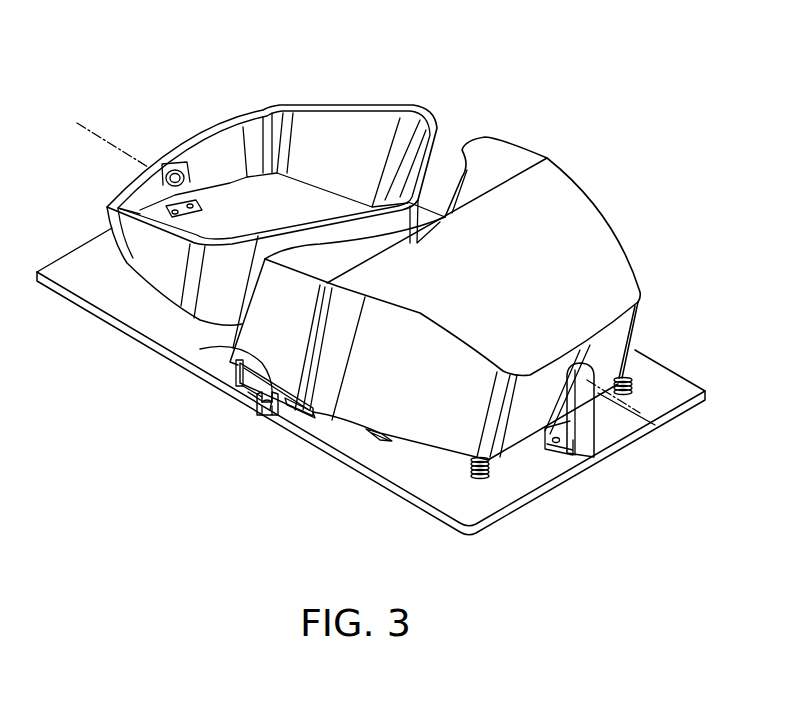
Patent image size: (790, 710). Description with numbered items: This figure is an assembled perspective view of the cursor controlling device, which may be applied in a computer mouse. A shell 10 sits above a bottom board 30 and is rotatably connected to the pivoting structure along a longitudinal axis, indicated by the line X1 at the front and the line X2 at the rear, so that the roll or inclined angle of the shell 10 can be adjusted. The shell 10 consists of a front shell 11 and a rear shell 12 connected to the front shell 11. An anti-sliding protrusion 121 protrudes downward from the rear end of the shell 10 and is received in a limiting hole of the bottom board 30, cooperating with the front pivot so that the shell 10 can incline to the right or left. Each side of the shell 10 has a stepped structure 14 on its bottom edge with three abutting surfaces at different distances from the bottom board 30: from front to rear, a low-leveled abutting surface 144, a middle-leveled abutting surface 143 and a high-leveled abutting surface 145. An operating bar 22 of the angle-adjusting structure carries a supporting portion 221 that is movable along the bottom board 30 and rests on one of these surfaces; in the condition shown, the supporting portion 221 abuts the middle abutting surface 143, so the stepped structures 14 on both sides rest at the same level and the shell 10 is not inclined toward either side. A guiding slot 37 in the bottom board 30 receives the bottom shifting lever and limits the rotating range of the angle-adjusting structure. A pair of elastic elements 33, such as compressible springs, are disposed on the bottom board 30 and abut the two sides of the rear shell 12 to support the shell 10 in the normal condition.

The shell 10 is at (505, 47).
The front shell 11 is at (364, 133).
The rear shell 12 is at (488, 163).
The anti-sliding protrusion 121 is at (563, 440).
The stepped structure 14 is at (237, 370).
The middle-leveled abutting surface 143 is at (233, 347).
The low-leveled abutting surface 144 is at (253, 408).
The high-leveled abutting surface 145 is at (290, 404).
The operating bar 22 is at (250, 406).
The supporting portion 221 is at (265, 404).
The bottom board 30 is at (60, 248).
The elastic elements 33 is at (480, 470).
The guiding slot 37 is at (381, 441).
The longitudinal axis X1 is at (99, 130).
The longitudinal axis X2 is at (638, 413).